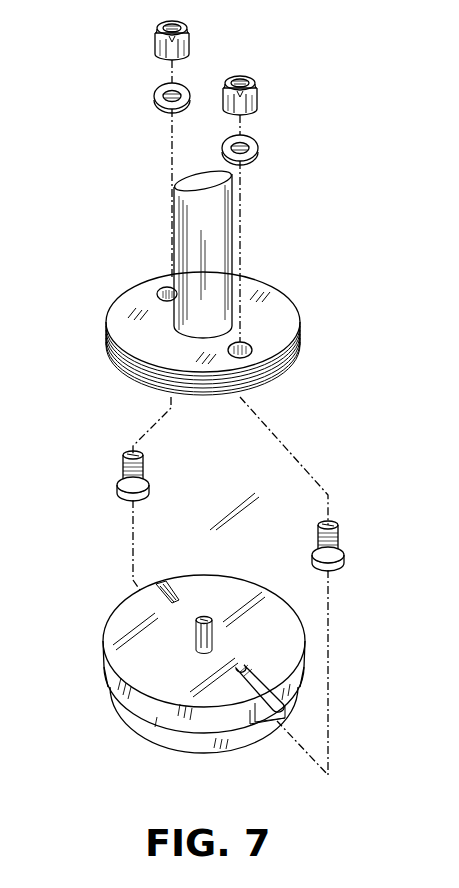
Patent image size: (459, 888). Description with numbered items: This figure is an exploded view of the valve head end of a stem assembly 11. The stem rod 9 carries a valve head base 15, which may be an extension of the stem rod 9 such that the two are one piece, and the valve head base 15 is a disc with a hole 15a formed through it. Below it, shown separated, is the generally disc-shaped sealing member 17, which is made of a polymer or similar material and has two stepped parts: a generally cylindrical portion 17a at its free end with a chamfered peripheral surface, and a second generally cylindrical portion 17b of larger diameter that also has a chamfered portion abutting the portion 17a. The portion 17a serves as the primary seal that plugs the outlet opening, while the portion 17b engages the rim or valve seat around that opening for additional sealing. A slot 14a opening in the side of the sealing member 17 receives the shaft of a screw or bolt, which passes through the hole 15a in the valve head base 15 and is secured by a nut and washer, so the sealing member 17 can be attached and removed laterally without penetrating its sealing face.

The stem assembly 11 is at (91, 183).
The stem rod 9 is at (216, 200).
The valve head base 15 is at (298, 349).
The hole 15a is at (252, 357).
The sealing member 17 is at (95, 608).
The slot 14a is at (144, 594).
The generally cylindrical portion 17a is at (168, 742).
The second generally cylindrical portion 17b is at (133, 731).